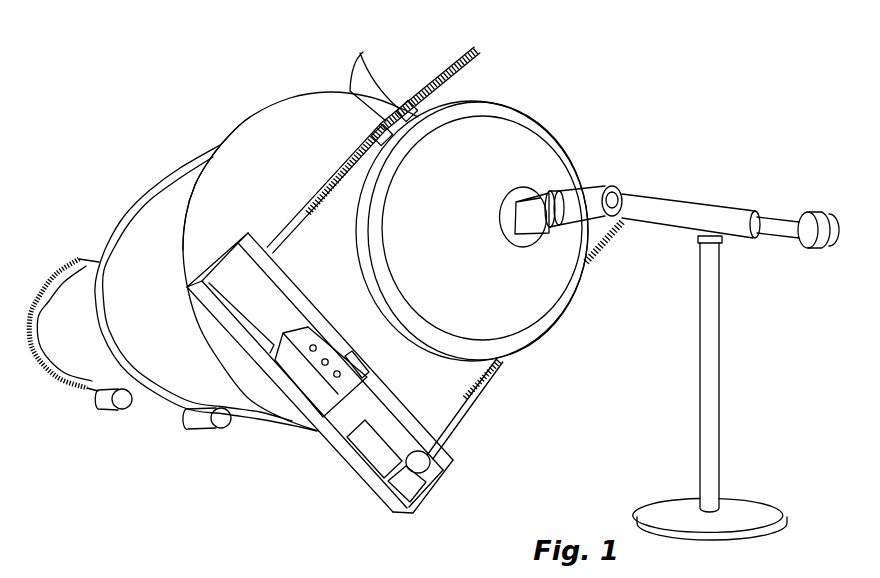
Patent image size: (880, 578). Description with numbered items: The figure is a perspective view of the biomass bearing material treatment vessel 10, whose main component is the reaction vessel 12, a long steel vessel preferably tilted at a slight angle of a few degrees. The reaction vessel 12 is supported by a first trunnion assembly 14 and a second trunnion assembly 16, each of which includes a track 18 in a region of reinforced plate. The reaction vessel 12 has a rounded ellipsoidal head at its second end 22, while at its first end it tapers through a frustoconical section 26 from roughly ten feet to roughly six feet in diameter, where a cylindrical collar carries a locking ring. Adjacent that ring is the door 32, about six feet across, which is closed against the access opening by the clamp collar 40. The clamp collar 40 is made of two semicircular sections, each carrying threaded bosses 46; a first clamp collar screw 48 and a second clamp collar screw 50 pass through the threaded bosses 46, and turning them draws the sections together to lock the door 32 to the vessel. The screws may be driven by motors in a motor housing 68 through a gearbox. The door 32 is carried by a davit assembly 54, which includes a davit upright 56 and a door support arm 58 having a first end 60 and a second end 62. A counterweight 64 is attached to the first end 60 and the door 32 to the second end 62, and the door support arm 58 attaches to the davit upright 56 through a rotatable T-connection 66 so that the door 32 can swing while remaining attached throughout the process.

The biomass bearing material treatment vessel 10 is at (414, 81).
The reaction vessel 12 is at (187, 182).
The first trunnion assembly 14 is at (197, 420).
The second trunnion assembly 16 is at (100, 397).
The track 18 is at (150, 187).
The second end 22 is at (33, 352).
The frustoconical section 26 is at (268, 131).
The door 32 is at (523, 153).
The clamp collar 40 is at (543, 337).
The threaded bosses 46 is at (363, 52).
The first clamp collar screw 48 is at (466, 400).
The second clamp collar screw 50 is at (308, 212).
The davit assembly 54 is at (738, 388).
The davit upright 56 is at (720, 357).
The door support arm 58 is at (772, 213).
The first end 60 is at (808, 242).
The second end 62 is at (645, 212).
The counterweight 64 is at (824, 249).
The T-connection 66 is at (710, 200).
The motor housing 68 is at (437, 482).